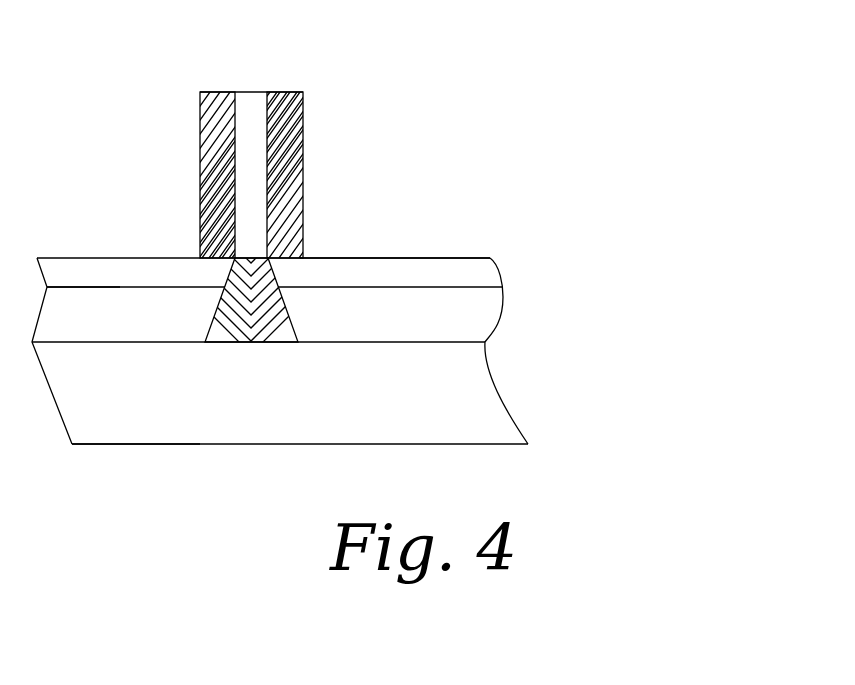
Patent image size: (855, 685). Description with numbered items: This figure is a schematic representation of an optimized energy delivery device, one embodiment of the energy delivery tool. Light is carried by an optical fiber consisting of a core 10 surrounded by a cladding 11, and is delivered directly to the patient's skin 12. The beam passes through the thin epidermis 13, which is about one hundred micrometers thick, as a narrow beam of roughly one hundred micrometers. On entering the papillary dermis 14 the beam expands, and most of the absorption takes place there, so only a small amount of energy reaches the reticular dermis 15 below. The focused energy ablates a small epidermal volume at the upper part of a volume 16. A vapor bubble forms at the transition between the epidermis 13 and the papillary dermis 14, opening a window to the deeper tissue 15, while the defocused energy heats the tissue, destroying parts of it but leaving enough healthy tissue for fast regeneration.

The core 10 is at (243, 98).
The cladding 11 is at (288, 98).
The patient's skin 12 is at (405, 233).
The epidermis 13 is at (466, 262).
The papillary dermis 14 is at (97, 298).
The reticular dermis 15 is at (98, 447).
The volume 16 is at (288, 303).